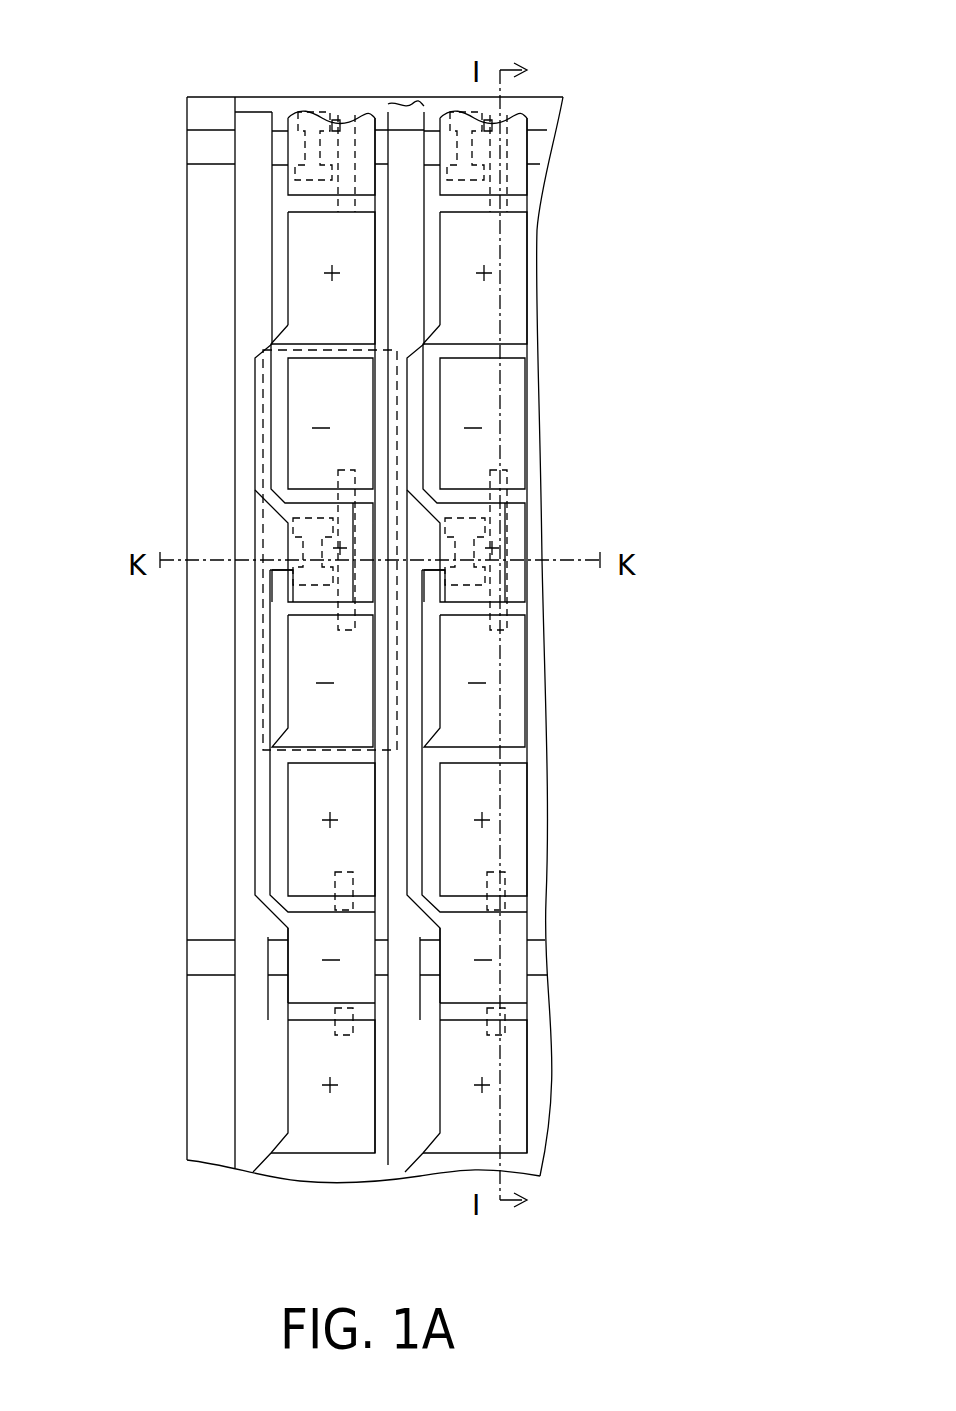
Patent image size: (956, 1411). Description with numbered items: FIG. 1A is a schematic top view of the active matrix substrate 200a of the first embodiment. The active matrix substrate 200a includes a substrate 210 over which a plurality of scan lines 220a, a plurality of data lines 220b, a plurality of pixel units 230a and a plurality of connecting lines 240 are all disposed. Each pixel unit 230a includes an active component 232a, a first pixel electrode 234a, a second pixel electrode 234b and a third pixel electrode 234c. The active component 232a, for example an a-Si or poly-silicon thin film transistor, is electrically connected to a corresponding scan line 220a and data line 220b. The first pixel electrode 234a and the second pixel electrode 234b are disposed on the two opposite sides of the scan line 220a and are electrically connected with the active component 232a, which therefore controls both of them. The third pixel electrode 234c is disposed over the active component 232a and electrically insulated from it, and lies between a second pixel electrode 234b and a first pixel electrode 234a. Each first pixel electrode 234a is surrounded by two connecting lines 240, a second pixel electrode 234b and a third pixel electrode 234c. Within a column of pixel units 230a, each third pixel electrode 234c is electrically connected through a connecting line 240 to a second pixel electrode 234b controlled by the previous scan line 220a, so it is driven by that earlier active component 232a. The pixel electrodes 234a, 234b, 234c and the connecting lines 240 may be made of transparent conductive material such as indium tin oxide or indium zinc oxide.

The active matrix substrate 200a is at (718, 1208).
The substrate 210 is at (327, 97).
The scan line 220a is at (195, 138).
The data line 220b is at (262, 125).
The pixel unit 230a is at (255, 370).
The active component 232a is at (490, 524).
The first pixel electrode 234a is at (300, 428).
The second pixel electrode 234b is at (295, 657).
The third pixel electrode 234c is at (293, 593).
The connecting line 240 is at (258, 815).